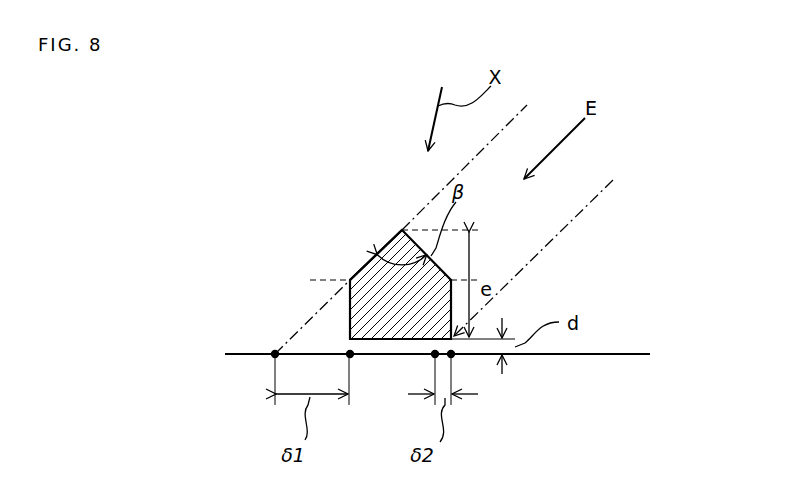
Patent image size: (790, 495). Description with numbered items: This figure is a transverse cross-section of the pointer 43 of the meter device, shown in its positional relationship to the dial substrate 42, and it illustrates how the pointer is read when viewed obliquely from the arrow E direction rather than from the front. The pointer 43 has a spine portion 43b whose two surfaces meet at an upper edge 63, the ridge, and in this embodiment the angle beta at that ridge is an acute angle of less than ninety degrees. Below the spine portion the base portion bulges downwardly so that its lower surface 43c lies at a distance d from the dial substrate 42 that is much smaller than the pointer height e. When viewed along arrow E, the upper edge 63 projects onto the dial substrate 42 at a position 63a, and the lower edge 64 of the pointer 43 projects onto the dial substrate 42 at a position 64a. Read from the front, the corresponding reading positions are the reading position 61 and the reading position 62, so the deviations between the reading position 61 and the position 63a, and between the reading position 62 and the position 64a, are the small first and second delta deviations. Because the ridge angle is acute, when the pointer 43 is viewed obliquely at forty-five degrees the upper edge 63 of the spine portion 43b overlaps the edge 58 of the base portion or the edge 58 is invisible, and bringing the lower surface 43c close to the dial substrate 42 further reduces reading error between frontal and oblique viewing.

The dial substrate 42 is at (620, 354).
The pointer 43 is at (441, 264).
The spine portion 43b is at (377, 252).
The lower surface 43c is at (386, 341).
The edge of base portion 58 is at (350, 280).
The reading position 61 is at (350, 354).
The reading position 62 is at (451, 355).
The upper edge 63 is at (401, 229).
The position 63a is at (275, 354).
The lower edge 64 is at (460, 339).
The position 64a is at (435, 356).